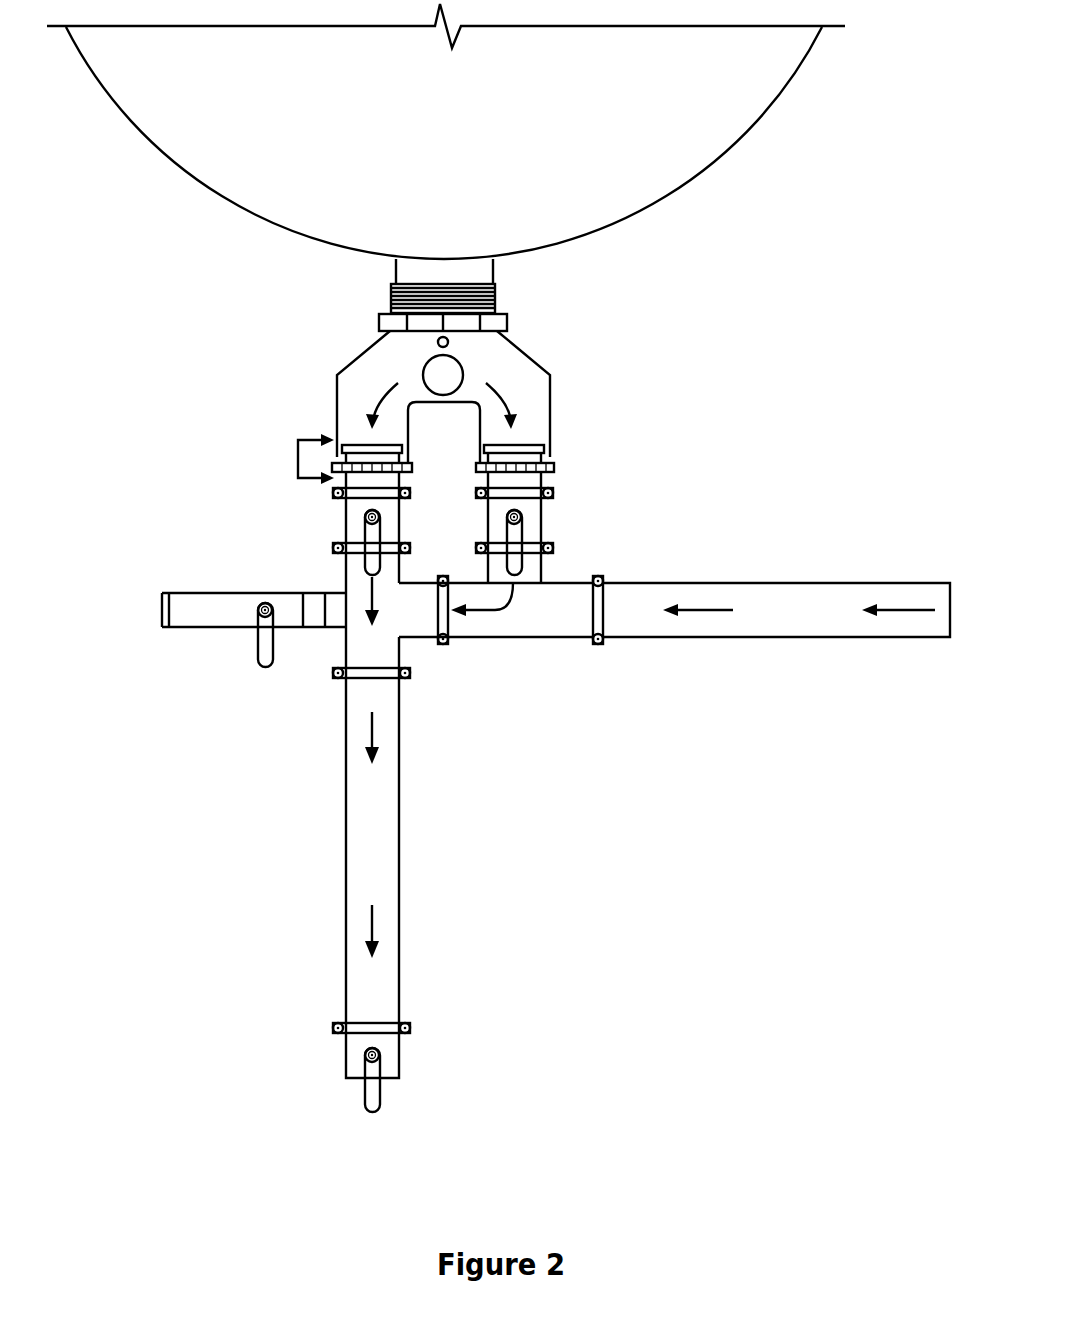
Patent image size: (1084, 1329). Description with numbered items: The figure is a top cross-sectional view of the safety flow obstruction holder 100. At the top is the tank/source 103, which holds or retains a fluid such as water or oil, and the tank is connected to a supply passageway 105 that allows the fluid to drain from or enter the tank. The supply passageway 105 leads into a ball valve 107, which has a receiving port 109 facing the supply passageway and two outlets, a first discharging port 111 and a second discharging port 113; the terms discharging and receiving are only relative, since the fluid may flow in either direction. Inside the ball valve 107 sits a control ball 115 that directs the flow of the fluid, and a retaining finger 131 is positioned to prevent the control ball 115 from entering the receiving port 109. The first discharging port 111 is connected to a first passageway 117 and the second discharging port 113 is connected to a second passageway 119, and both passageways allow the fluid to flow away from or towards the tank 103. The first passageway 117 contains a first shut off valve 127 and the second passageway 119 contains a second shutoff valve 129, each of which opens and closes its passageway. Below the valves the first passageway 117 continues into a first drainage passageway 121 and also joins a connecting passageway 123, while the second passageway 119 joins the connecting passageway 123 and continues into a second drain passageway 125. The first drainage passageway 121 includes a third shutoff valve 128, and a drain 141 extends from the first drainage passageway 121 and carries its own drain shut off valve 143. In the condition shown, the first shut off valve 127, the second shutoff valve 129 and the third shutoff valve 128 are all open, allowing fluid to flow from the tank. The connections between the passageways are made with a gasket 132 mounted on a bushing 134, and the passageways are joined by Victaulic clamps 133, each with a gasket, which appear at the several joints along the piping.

The safety flow obstruction holder 100 is at (498, 567).
The tank/source 103 is at (695, 178).
The supply passageway 105 is at (495, 293).
The ball valve 107 is at (336, 407).
The receiving port 109 is at (385, 345).
The first discharging port 111 is at (408, 427).
The second discharging port 113 is at (530, 447).
The control ball 115 is at (463, 375).
The first passageway 117 is at (345, 585).
The second passageway 119 is at (545, 563).
The first drainage passageway 121 is at (399, 857).
The connecting passageway 123 is at (470, 638).
The second drain passageway 125 is at (673, 638).
The first shut off valve 127 is at (365, 530).
The third shutoff valve 128 is at (378, 1092).
The second shutoff valve 129 is at (525, 532).
The retaining finger 131 is at (448, 343).
The gasket 132 is at (700, 595).
The Victaulic (clamp) 133 is at (333, 547).
The bushing 134 is at (603, 577).
The drain 141 is at (303, 627).
The drain shut off valve 143 is at (257, 648).